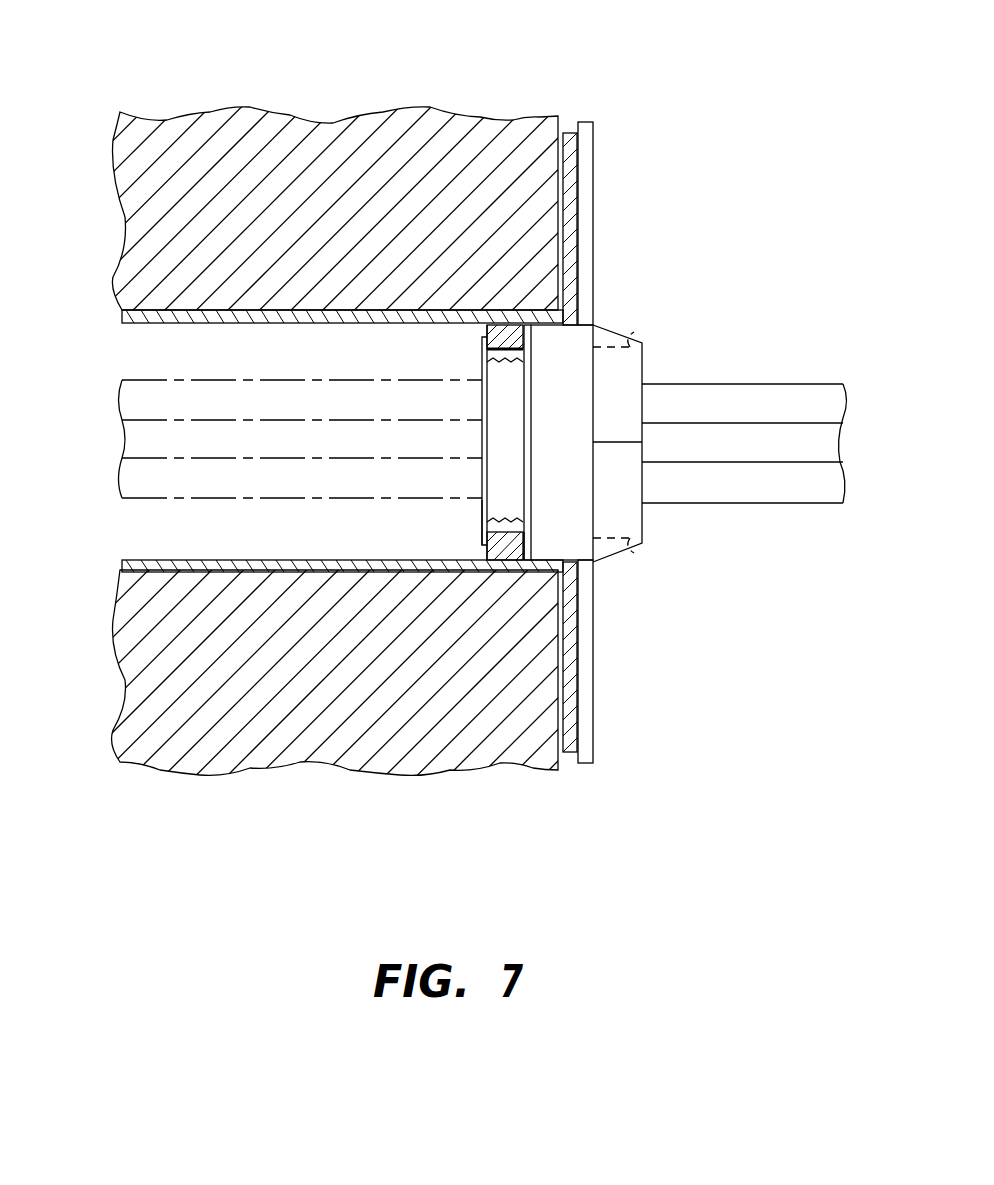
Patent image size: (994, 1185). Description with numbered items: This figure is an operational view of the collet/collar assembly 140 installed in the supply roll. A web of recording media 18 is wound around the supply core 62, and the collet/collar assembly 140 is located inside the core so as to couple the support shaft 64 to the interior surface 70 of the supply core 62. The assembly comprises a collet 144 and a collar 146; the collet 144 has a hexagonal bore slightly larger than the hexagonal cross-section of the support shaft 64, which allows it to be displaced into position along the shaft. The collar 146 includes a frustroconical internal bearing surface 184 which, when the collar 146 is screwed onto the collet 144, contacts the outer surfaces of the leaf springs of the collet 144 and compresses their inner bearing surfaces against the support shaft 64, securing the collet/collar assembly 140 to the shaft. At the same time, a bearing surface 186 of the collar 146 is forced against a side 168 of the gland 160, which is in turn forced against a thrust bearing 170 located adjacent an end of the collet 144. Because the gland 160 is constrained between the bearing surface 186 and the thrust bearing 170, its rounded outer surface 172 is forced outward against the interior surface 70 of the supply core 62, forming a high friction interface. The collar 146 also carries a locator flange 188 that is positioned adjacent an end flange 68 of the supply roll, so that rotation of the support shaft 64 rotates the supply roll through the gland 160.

The recording media 18 is at (445, 125).
The supply core 62 is at (125, 315).
The interior surface 70 is at (130, 322).
The end flange 68 is at (570, 130).
The locator flange 188 is at (588, 122).
The gland 160 is at (515, 345).
The outer surface 172 is at (498, 345).
The side 168 is at (510, 533).
The bearing surface 186 is at (522, 550).
The collet 144 is at (464, 349).
The thrust bearing 170 is at (480, 517).
The collar 146 is at (632, 322).
The frustroconical internal bearing surface 184 is at (640, 336).
The support shaft 64 is at (838, 383).
The collet/collar assembly 140 is at (775, 64).